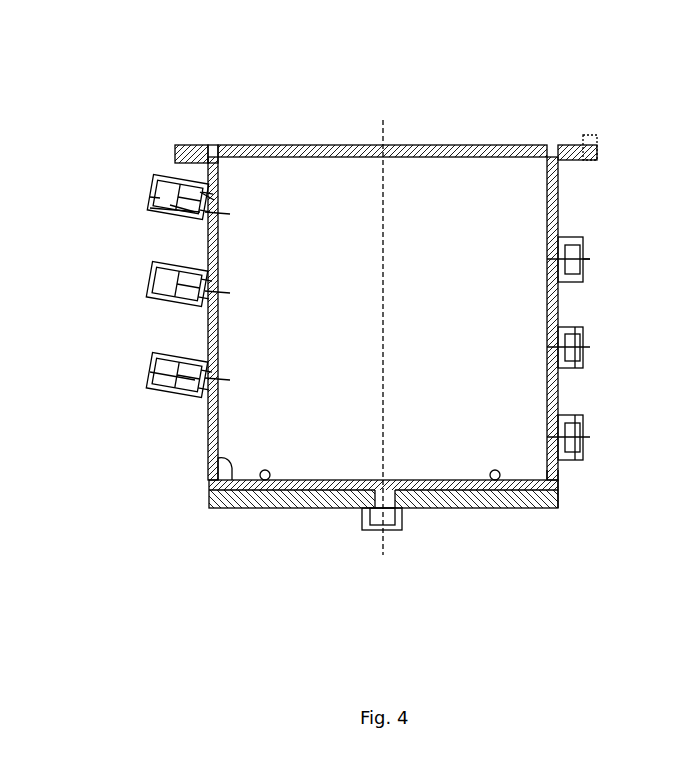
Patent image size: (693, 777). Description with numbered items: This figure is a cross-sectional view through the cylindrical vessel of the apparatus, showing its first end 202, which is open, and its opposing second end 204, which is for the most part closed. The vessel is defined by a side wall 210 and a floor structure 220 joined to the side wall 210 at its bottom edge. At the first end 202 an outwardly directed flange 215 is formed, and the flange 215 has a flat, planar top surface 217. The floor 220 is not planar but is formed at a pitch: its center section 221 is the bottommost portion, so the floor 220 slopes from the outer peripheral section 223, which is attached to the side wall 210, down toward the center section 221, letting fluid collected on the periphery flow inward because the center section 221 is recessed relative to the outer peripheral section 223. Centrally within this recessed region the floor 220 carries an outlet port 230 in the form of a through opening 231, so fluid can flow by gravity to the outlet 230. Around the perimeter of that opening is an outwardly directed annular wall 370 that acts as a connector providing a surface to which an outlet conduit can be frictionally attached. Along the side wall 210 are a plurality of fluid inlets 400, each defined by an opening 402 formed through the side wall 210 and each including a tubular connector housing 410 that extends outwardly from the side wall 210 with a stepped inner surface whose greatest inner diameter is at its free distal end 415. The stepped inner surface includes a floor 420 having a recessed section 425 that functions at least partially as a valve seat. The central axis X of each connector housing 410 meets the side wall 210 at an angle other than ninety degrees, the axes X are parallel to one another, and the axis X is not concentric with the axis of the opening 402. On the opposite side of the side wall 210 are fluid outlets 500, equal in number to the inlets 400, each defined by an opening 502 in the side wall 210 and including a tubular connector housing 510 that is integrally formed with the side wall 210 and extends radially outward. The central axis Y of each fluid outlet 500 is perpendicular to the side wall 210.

The first end 202 is at (553, 148).
The flange 215 is at (193, 146).
The top surface 217 is at (212, 150).
The floor of stepped inner surface 420 is at (200, 195).
The side wall 210 is at (213, 440).
The floor structure 220 is at (290, 500).
The outer peripheral section 223 is at (213, 457).
The second end 204 is at (553, 510).
The through opening 231 is at (375, 490).
The center section 221 is at (405, 488).
The annular shaped wall 370 is at (384, 532).
The outlet port 230 is at (408, 523).
The fluid inlet 400 is at (138, 170).
The opening 402 is at (215, 212).
The free distal end 415 is at (200, 212).
The connector housing 410 is at (177, 210).
The recessed section 425 is at (165, 372).
The central axis of connector housing X is at (150, 197).
The fluid outlet 500 is at (564, 338).
The opening 502 is at (548, 256).
The tubular connector housing 510 is at (572, 326).
The central axis of fluid outlet Y is at (598, 256).